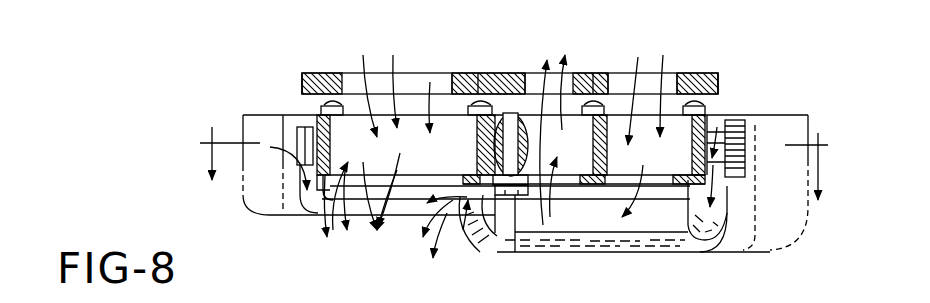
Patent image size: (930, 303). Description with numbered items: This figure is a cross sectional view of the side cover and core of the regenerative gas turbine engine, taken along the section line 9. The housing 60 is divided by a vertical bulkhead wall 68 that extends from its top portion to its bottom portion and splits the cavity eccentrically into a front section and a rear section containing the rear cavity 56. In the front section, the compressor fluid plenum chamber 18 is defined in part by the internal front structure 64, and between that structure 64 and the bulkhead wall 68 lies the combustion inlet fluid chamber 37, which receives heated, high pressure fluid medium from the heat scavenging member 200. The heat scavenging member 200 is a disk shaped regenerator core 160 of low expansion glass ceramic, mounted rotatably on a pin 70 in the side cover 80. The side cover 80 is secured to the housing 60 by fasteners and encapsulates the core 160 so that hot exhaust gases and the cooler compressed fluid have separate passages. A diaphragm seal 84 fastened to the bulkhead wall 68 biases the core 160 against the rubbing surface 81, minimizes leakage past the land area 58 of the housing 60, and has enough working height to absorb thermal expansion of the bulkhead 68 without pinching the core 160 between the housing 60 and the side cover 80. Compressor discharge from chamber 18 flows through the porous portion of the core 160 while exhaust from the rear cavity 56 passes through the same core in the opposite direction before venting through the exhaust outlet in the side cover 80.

The section line 9- 9 is at (514, 183).
The compressor fluid plenum chamber 18 is at (620, 73).
The combustion inlet fluid chamber 37 is at (532, 77).
The rear cavity 56 is at (353, 85).
The land area 58 is at (717, 100).
The housing 60 is at (313, 77).
The internal front structure 64 is at (582, 50).
The bulkhead wall 68 is at (465, 73).
The pin 70 is at (515, 252).
The side cover 80 is at (603, 252).
The rubbing surface 81 is at (295, 213).
The seal 84 is at (323, 108).
The regenerator core 160 is at (730, 113).
The heat scavenging member 200 is at (327, 215).